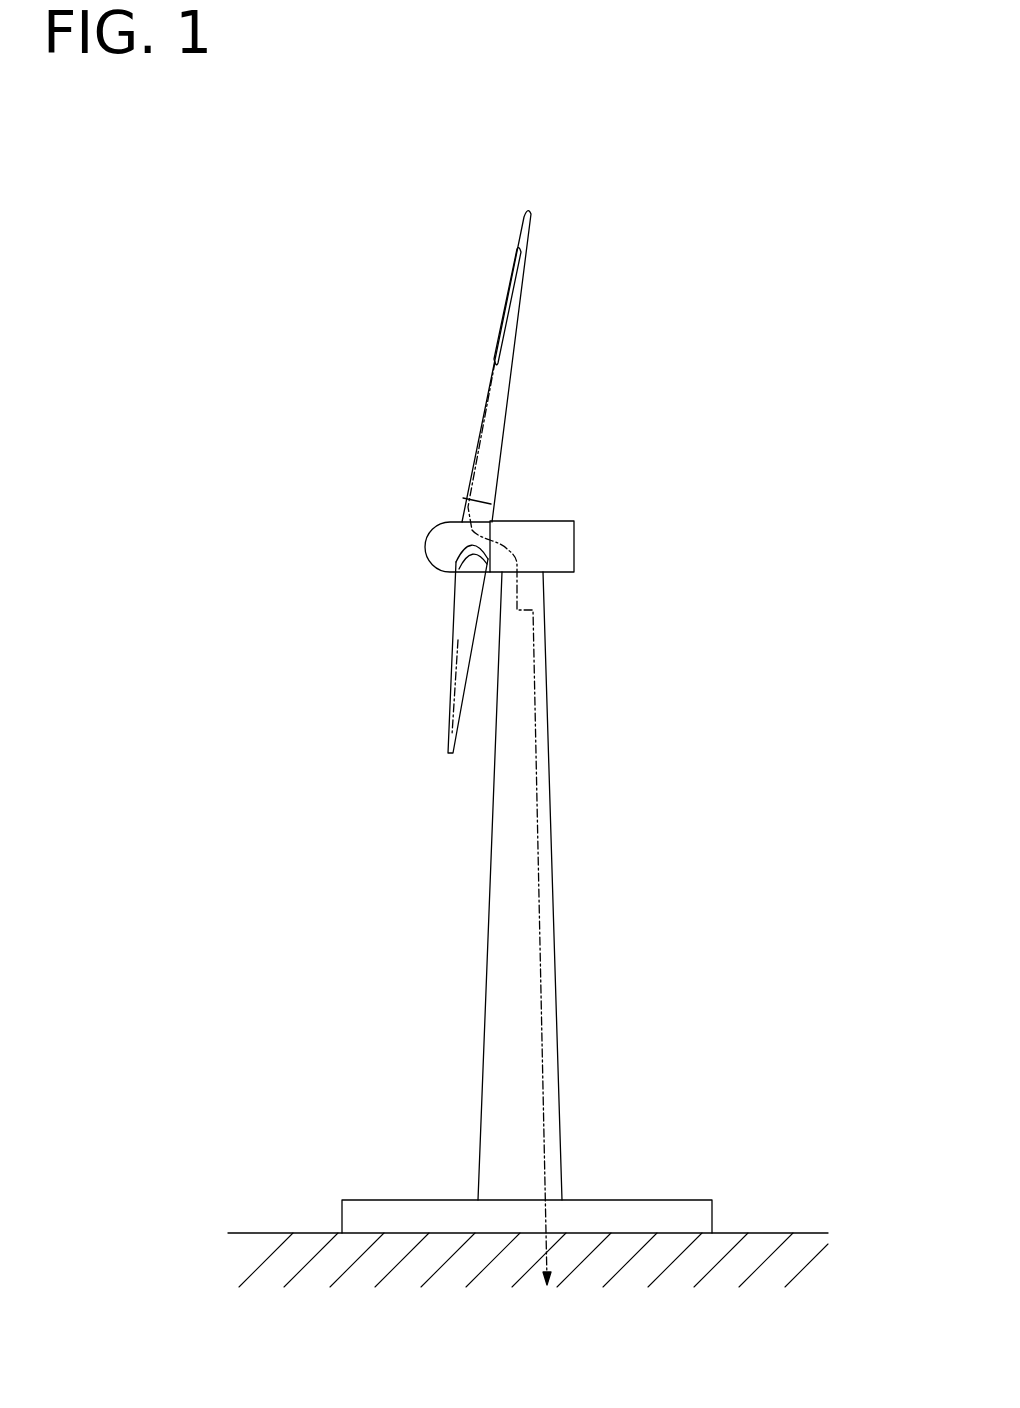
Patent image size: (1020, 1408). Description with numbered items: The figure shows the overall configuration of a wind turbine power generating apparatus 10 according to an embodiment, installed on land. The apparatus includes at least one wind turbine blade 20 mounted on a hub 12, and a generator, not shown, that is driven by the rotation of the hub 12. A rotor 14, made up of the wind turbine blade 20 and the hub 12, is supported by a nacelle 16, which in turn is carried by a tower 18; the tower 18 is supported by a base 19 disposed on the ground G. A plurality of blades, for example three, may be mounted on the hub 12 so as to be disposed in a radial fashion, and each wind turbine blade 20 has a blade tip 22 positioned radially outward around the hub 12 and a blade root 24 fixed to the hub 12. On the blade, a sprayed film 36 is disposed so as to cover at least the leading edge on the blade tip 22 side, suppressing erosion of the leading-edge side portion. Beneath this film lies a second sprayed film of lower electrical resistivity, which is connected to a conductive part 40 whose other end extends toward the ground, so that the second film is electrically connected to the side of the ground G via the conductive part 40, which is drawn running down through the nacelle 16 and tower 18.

The wind turbine power generating apparatus 10 is at (716, 333).
The hub 12 is at (440, 540).
The rotor 14 is at (392, 512).
The nacelle 16 is at (553, 520).
The tower 18 is at (487, 1008).
The base 19 is at (636, 1200).
The wind turbine blade 20 is at (515, 358).
The blade tip 22 is at (530, 209).
The blade root 24 is at (463, 505).
The sprayed film 36 is at (497, 333).
The conductive part 40 is at (540, 902).
The ground G is at (743, 1243).